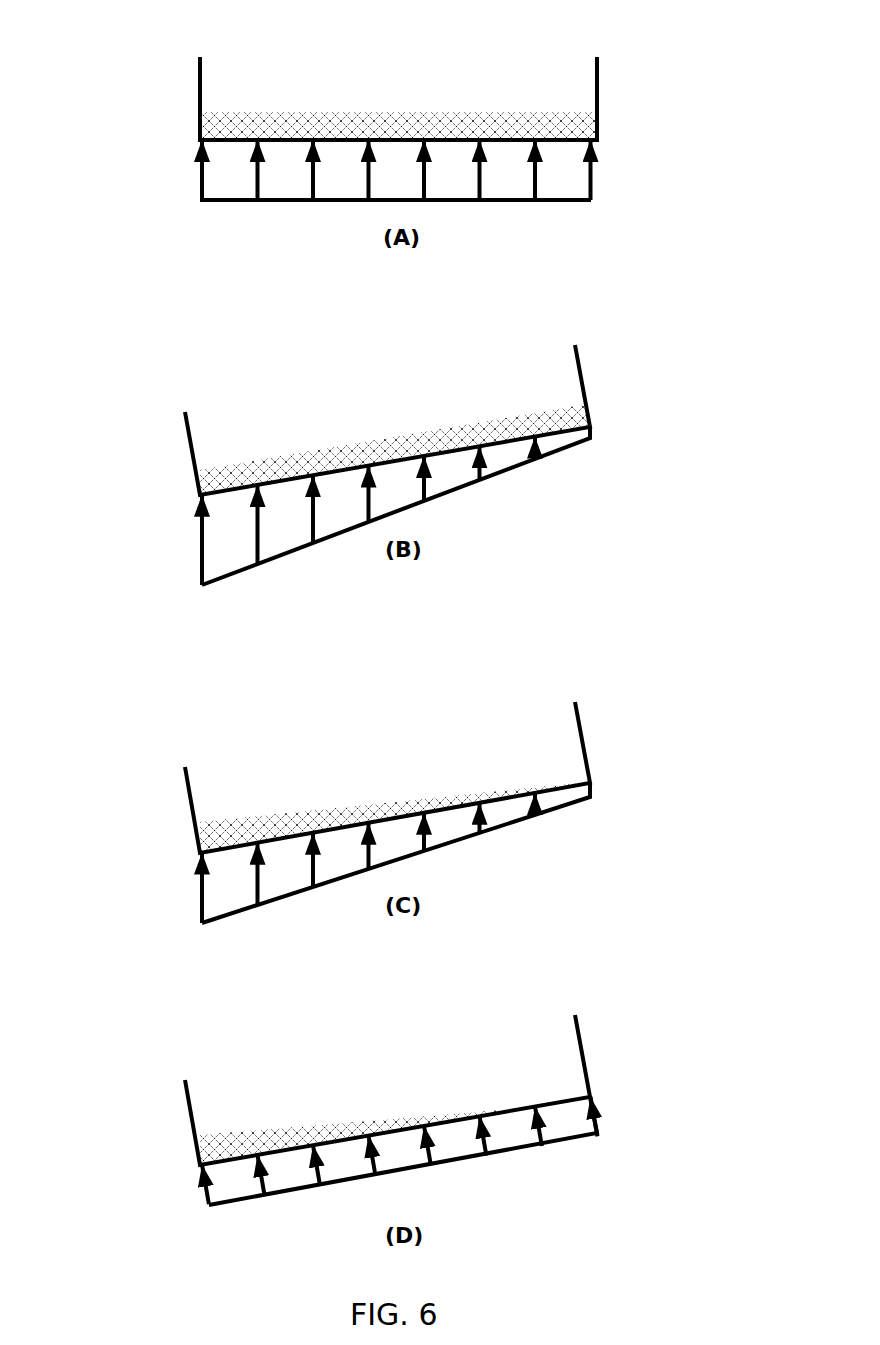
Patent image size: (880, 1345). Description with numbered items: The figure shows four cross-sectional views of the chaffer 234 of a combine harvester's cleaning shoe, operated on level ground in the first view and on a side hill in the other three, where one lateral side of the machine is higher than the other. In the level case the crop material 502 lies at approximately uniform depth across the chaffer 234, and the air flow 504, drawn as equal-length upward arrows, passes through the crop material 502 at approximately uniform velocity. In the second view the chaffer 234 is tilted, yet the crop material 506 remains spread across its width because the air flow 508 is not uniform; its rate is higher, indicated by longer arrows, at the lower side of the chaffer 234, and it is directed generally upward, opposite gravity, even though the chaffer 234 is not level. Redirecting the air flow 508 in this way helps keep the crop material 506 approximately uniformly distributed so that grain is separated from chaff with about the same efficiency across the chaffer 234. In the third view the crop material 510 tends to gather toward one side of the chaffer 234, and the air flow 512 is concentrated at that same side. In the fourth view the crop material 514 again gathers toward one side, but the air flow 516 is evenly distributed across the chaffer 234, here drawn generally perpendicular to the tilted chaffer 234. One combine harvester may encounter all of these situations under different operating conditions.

The chaffer 234 is at (199, 92).
The crop material 502 is at (390, 112).
The air flow 504 is at (592, 172).
The crop material 506 is at (284, 456).
The air flow 508 is at (483, 473).
The crop material 510 is at (284, 814).
The air flow 512 is at (483, 830).
The crop material 514 is at (284, 1126).
The air flow 516 is at (486, 1142).